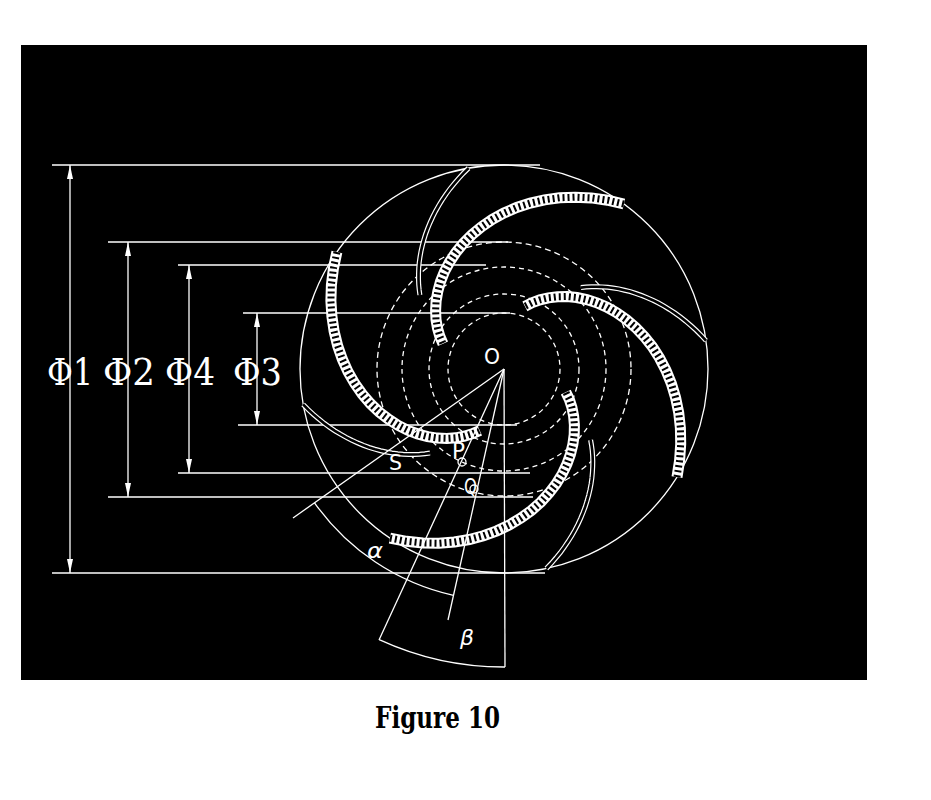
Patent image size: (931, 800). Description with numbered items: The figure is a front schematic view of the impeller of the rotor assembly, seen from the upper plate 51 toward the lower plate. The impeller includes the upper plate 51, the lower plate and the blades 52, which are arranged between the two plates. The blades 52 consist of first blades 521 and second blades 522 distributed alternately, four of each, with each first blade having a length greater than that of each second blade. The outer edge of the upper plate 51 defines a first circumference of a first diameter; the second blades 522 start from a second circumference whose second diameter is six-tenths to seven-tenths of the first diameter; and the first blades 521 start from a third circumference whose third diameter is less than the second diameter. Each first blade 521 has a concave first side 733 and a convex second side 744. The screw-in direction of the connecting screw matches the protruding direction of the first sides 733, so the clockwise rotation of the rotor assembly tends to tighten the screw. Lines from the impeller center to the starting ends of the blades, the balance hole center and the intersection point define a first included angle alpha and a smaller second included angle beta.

The upper plate 51 is at (504, 320).
The blades 52 is at (564, 273).
The first blades 521 is at (625, 270).
The second blades 522 is at (719, 349).
The first side 733 is at (551, 435).
The second side 744 is at (658, 390).